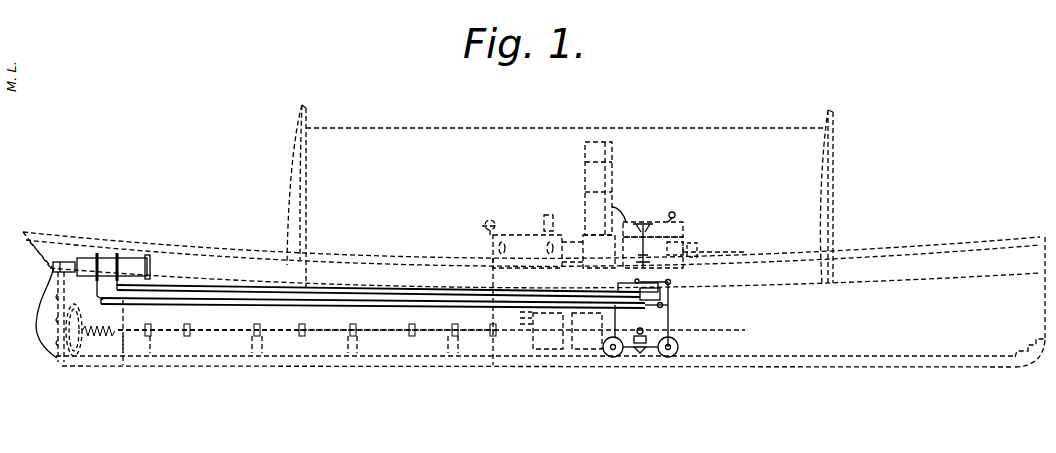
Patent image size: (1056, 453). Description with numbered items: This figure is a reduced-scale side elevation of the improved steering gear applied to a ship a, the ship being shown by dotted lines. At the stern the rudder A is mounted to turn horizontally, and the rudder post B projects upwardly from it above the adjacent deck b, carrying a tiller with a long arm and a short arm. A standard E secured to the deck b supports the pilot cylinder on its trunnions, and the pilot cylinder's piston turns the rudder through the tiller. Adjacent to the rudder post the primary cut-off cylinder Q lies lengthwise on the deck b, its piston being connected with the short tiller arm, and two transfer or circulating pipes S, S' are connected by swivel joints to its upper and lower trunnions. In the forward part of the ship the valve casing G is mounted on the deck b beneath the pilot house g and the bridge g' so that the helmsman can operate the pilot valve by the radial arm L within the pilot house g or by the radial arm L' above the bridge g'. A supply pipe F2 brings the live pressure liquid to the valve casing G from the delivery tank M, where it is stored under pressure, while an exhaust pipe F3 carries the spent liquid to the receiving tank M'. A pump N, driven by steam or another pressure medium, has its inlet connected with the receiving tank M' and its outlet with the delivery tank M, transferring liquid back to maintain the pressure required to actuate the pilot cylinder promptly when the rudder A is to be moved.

The rudder A is at (38, 334).
The ship a is at (550, 339).
The rudder post B is at (56, 262).
The deck b is at (90, 318).
The primary cut-off cylinder Q is at (87, 262).
The standard E is at (378, 281).
The lower pipe E' is at (373, 287).
The transfer pipe S is at (209, 318).
The transfer pipe S' is at (400, 318).
The valve casing G is at (632, 282).
The radial handle or arm L is at (634, 246).
The radial handle or arm L' is at (621, 213).
The pilot house g is at (676, 247).
The bridge g' is at (653, 221).
The supply pipe F2 is at (614, 320).
The exhaust pipe F3 is at (670, 313).
The delivery tank M is at (610, 365).
The receiving tank M' is at (676, 365).
The pump N is at (641, 355).